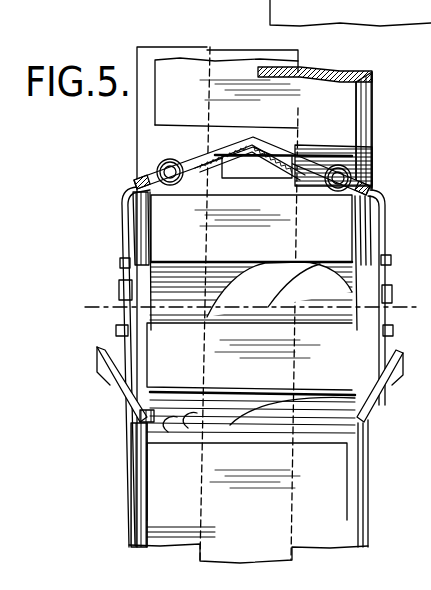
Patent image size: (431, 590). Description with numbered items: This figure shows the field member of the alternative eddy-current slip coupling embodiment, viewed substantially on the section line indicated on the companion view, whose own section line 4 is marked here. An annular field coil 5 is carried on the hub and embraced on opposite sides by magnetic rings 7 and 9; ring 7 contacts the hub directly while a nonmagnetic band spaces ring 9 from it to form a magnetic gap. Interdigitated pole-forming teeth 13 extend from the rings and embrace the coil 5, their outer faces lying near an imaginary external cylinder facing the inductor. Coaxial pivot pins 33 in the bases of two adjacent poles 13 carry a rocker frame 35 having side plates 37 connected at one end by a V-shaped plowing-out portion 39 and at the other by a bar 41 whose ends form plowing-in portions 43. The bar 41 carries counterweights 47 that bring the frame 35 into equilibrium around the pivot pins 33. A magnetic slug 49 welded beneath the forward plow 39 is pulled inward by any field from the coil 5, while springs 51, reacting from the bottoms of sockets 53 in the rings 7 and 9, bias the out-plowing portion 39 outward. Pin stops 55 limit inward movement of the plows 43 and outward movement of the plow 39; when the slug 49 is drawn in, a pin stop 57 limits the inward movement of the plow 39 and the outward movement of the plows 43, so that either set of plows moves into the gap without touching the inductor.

The magnetic ring 9 is at (178, 53).
The annular field coil 5 is at (251, 58).
The magnetic ring 7 is at (340, 72).
The pole-forming teeth 13 is at (194, 98).
The side plates 37 is at (124, 222).
The V-shaped plowing-out portion 39 is at (197, 166).
The magnetic slug 49 is at (268, 152).
The sockets 53 is at (158, 164).
The springs 51 is at (162, 170).
The rocker frame 35 is at (380, 183).
The pin stop 57 is at (121, 261).
The pivot pins 33 is at (120, 284).
The pin stops 55 is at (116, 331).
The section line 4— 4 is at (91, 288).
The plowing-in portions 43 is at (108, 378).
The bar 41 is at (140, 413).
The counterweights 47 is at (173, 436).